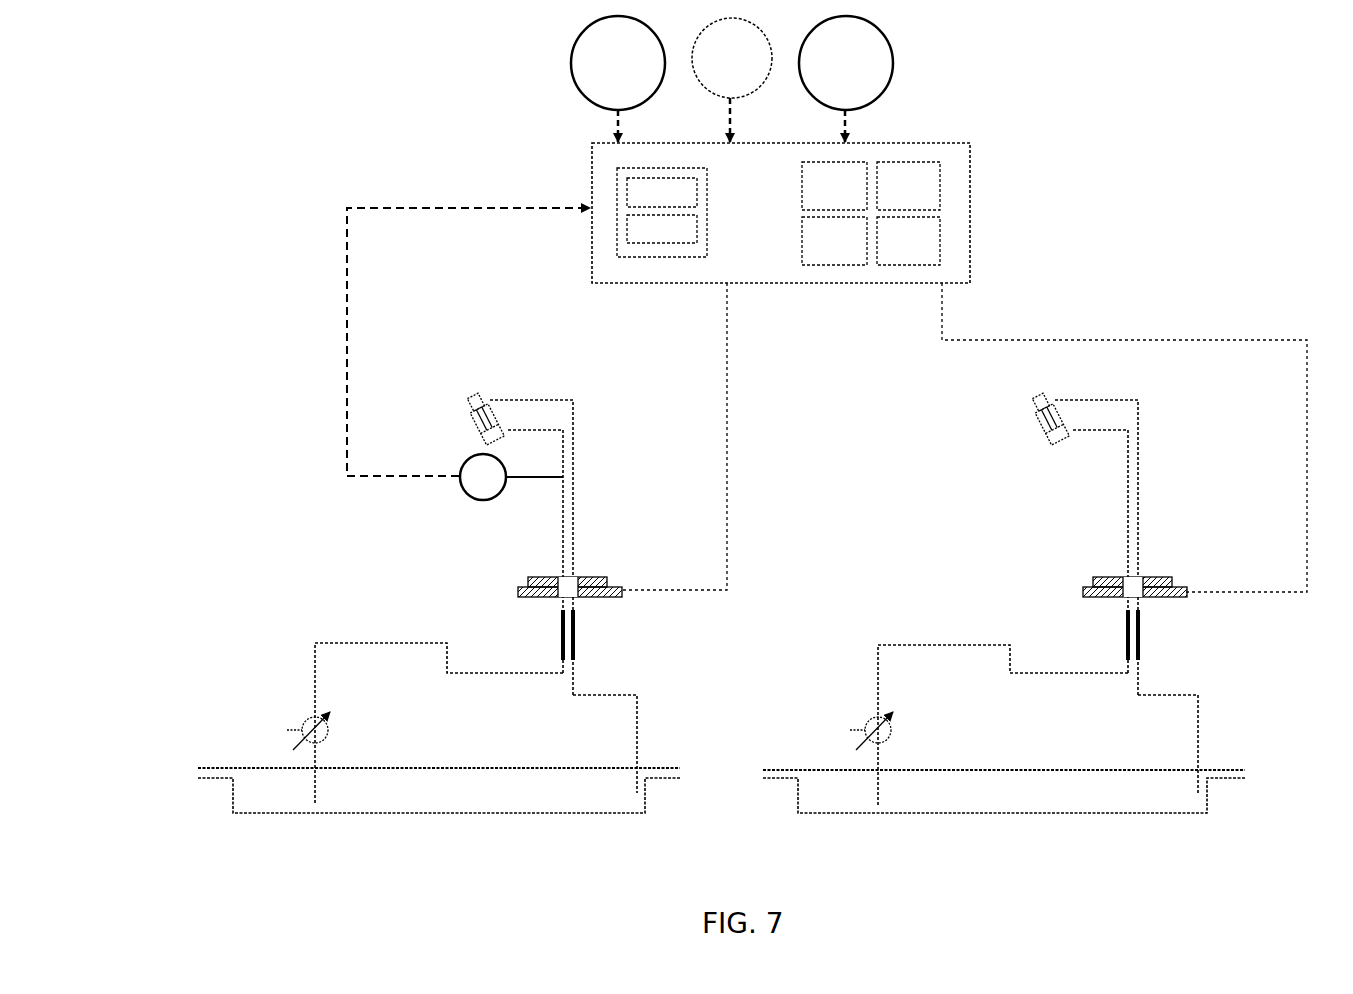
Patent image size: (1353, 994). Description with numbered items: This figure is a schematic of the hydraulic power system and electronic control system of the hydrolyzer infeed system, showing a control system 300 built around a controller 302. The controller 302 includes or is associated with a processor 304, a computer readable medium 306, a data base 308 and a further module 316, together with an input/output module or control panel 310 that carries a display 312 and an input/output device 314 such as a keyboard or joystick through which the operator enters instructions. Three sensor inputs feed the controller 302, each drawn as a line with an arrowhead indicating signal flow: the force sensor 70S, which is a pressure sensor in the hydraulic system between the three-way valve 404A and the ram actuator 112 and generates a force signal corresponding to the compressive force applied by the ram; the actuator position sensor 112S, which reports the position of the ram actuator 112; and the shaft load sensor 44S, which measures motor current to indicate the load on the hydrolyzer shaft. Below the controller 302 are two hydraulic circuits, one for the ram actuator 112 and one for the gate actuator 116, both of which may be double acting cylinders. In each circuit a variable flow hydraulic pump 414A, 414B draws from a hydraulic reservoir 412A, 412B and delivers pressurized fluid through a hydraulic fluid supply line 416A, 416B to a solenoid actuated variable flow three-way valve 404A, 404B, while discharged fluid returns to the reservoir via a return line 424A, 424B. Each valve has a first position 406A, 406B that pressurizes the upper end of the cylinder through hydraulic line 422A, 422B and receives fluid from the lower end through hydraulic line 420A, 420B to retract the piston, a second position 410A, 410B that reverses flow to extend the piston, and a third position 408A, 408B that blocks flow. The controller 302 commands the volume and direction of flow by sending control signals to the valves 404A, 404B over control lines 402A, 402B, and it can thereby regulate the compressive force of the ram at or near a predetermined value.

The control system 300 is at (227, 166).
The controller 302 is at (975, 148).
The processor 304 is at (834, 186).
The computer readable medium 306 is at (908, 186).
The data base 308 is at (834, 241).
The control panel 310 is at (707, 190).
The display 312 is at (662, 192).
The input/output device 314 is at (662, 229).
The controller module 316 is at (908, 241).
The force sensor 70S is at (506, 258).
The actuator position sensor 112S is at (732, 80).
The shaft load sensor 44S is at (846, 79).
The ram actuator 112 is at (470, 430).
The gate actuator 116 is at (1035, 430).
The control line 402A is at (733, 408).
The control line 402B is at (1243, 338).
The three-way valve 404A is at (600, 568).
The three-way valve 404B is at (1165, 568).
The first position 406A is at (549, 577).
The first position 406B is at (1114, 577).
The third position 408A is at (558, 598).
The third position 408B is at (1123, 598).
The second position 410A is at (587, 577).
The second position 410B is at (1152, 577).
The hydraulic reservoir 412A is at (440, 815).
The hydraulic reservoir 412B is at (1055, 815).
The variable flow hydraulic pump 414A is at (330, 728).
The variable flow hydraulic pump 414B is at (895, 728).
The hydraulic fluid supply line 416A is at (312, 680).
The hydraulic fluid supply line 416B is at (875, 680).
The hydraulic line 420A is at (548, 428).
The hydraulic line 420B is at (1110, 430).
The hydraulic line 422A is at (540, 400).
The hydraulic line 422B is at (1118, 400).
The return line 424A is at (637, 735).
The return line 424B is at (1200, 740).